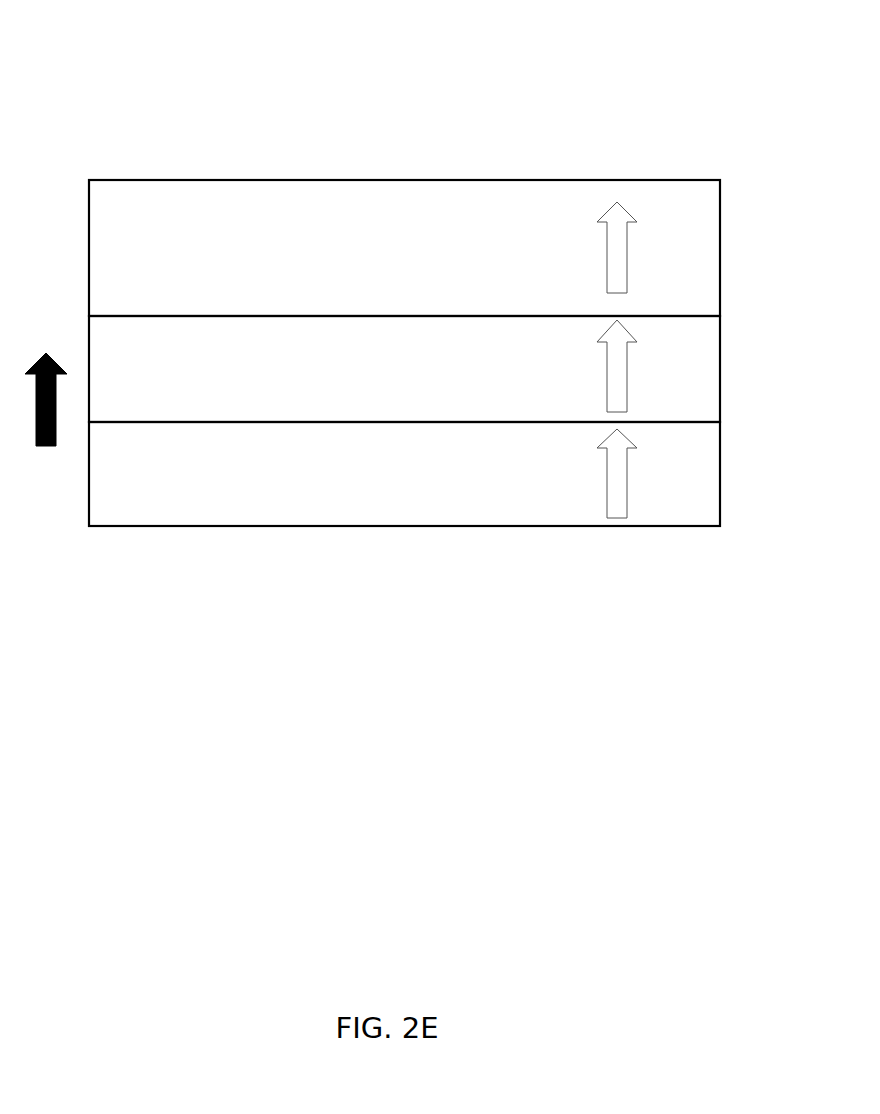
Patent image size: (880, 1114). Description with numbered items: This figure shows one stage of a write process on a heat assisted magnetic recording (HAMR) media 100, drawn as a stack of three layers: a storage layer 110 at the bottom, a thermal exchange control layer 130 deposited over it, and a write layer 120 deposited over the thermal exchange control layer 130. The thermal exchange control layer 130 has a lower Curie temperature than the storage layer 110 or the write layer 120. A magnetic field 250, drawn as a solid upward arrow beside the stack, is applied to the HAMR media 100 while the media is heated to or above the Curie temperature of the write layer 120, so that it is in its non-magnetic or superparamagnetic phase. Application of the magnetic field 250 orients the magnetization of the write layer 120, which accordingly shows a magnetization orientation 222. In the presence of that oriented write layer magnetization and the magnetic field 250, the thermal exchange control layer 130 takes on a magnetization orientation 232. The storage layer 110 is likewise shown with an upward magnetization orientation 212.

The heat assisted magnetic recording (HAMR) media 100 is at (100, 72).
The storage layer 110 is at (404, 474).
The write layer 120 is at (404, 248).
The thermal exchange control layer 130 is at (404, 369).
The storage layer magnetization 212 is at (615, 467).
The magnetization orientation 222 is at (614, 237).
The magnetization orientation 232 is at (614, 366).
The magnetic field 250 is at (46, 457).